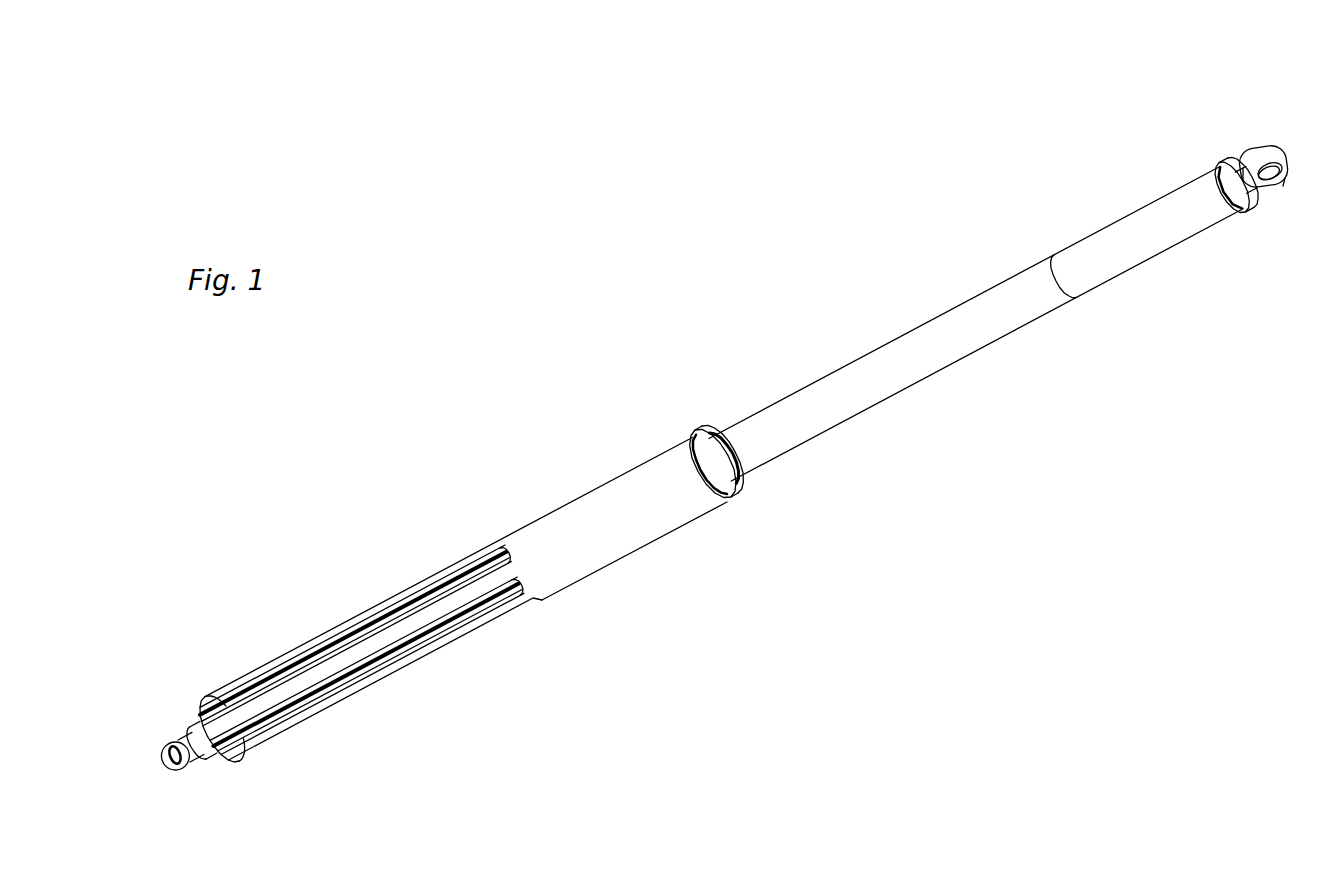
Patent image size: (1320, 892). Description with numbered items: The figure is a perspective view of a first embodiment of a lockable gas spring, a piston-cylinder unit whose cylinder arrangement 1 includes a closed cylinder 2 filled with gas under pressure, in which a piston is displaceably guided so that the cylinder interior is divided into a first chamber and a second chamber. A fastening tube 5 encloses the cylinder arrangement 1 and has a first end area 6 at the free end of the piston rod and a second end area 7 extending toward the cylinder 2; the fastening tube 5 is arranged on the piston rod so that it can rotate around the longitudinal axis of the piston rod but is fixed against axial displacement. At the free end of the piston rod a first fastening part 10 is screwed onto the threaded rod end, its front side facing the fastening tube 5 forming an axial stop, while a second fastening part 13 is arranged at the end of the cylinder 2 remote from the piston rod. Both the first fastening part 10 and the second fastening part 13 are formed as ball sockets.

The cylinder arrangement 1 is at (832, 356).
The cylinder 2 is at (798, 415).
The fastening tube 5 is at (546, 546).
The first end area 6 is at (214, 678).
The second end area 7 is at (683, 421).
The first fastening part 10 is at (168, 745).
The second fastening part 13 is at (1278, 150).